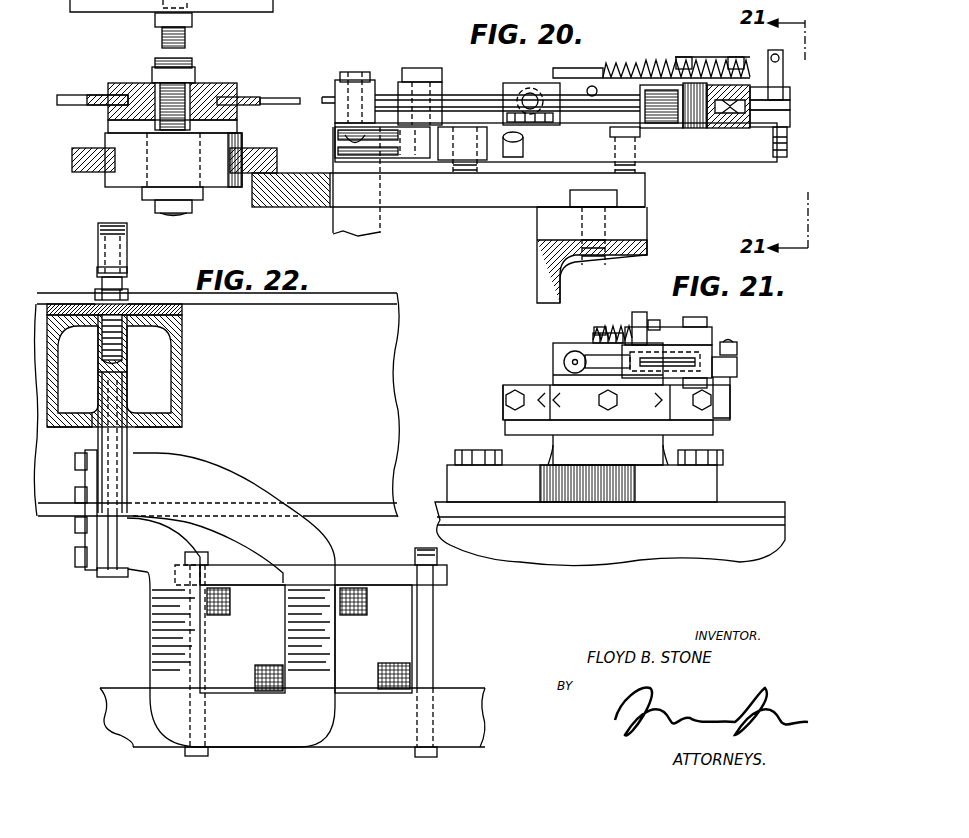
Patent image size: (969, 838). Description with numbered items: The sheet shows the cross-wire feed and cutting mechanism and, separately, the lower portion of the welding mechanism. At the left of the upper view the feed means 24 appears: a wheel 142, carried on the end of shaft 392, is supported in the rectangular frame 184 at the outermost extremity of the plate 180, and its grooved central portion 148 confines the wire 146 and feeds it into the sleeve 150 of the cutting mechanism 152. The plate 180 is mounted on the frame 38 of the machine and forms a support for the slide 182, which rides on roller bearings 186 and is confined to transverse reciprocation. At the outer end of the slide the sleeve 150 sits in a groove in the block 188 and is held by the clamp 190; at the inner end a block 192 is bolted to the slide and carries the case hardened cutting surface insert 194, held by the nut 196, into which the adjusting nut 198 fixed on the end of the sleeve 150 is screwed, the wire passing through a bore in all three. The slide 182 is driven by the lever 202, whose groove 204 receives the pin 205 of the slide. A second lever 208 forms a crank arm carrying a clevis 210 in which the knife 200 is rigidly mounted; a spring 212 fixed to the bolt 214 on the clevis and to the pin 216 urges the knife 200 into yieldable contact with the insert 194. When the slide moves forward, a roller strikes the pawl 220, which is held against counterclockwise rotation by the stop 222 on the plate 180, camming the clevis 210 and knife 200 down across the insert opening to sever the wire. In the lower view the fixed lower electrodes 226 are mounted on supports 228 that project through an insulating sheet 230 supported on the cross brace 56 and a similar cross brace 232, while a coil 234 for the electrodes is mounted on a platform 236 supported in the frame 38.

In FIG. 20, the feed means 24 is at (118, 58).
In FIG. 20, the frame 38 is at (528, 266).
In FIG. 21, the frame 38 is at (817, 479).
In FIG. 22, the cross brace 56 is at (57, 378).
In FIG. 20, the wheel 142 is at (234, 83).
In FIG. 20, the wire 146 is at (300, 99).
In FIG. 20, the grooved central portion 148 is at (257, 97).
In FIG. 20, the sleeve 150 is at (448, 97).
In FIG. 21, the cutting mechanism 152 is at (748, 338).
In FIG. 20, the plate 180 is at (458, 196).
In FIG. 21, the plate 180 is at (713, 433).
In FIG. 21, the slide 182 is at (563, 387).
In FIG. 20, the rectangular frame 184 is at (257, 152).
In FIG. 20, the roller bearings 186 is at (410, 158).
In FIG. 21, the roller bearings 186 is at (530, 405).
In FIG. 20, the block 188 is at (333, 115).
In FIG. 20, the clamp 190 is at (378, 85).
In FIG. 20, the block 192 is at (703, 126).
In FIG. 21, the block 192 is at (563, 347).
In FIG. 20, the cutting surface insert 194 is at (752, 126).
In FIG. 21, the cutting surface insert 194 is at (570, 356).
In FIG. 20, the nut 196 is at (678, 125).
In FIG. 20, the adjusting nut 198 is at (603, 122).
In FIG. 20, the knife 200 is at (788, 116).
In FIG. 21, the knife 200 is at (582, 355).
In FIG. 20, the lever 202 is at (378, 232).
In FIG. 20, the groove 204 is at (348, 97).
In FIG. 20, the pin 205 is at (335, 150).
In FIG. 21, the second lever 208 is at (710, 337).
In FIG. 20, the clevis 210 is at (785, 93).
In FIG. 21, the clevis 210 is at (657, 352).
In FIG. 20, the spring 212 is at (742, 62).
In FIG. 21, the spring 212 is at (629, 312).
In FIG. 20, the bolt 214 is at (784, 60).
In FIG. 21, the bolt 214 is at (638, 312).
In FIG. 20, the pin 216 is at (588, 88).
In FIG. 21, the pawl 220 is at (740, 361).
In FIG. 21, the stop 222 is at (733, 383).
In FIG. 22, the lower electrodes 226 is at (128, 231).
In FIG. 22, the supports 228 is at (108, 387).
In FIG. 22, the insulating sheet 230 is at (156, 304).
In FIG. 22, the cross brace 232 is at (183, 340).
In FIG. 22, the coil 234 is at (398, 635).
In FIG. 22, the platform 236 is at (453, 703).
In FIG. 20, the shaft 392 is at (182, 215).